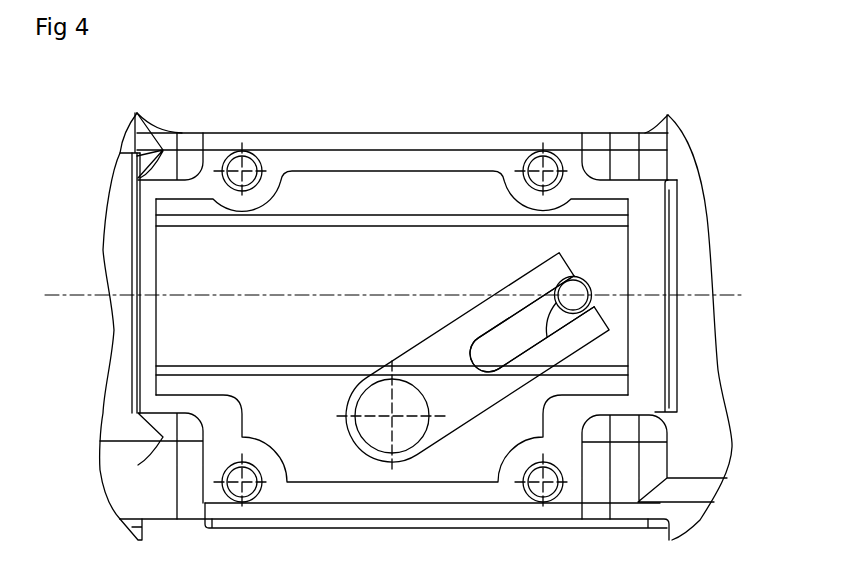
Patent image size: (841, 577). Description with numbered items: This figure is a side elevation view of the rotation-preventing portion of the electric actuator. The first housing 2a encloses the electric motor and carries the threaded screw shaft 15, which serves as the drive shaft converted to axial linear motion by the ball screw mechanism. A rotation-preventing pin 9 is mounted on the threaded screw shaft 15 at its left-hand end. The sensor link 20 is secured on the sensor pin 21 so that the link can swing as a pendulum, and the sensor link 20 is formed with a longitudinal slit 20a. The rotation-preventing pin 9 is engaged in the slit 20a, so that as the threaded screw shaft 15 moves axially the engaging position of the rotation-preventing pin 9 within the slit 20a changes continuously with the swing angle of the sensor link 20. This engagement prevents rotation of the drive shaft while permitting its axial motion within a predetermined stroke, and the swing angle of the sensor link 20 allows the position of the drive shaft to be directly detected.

The first housing 2a is at (336, 158).
The threaded screw shaft 15 is at (168, 258).
The rotation-preventing pin 9 is at (585, 282).
The slit 20a is at (592, 306).
The sensor link 20 is at (450, 427).
The sensor pin 21 is at (378, 440).